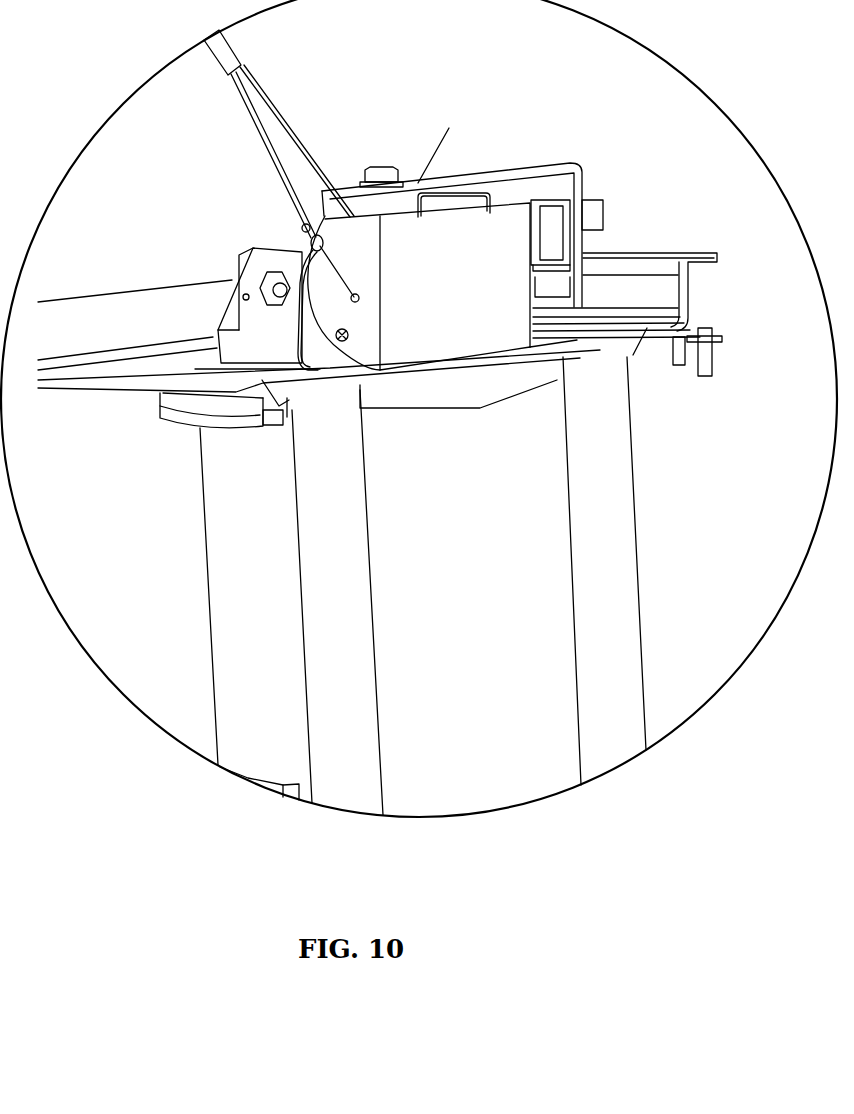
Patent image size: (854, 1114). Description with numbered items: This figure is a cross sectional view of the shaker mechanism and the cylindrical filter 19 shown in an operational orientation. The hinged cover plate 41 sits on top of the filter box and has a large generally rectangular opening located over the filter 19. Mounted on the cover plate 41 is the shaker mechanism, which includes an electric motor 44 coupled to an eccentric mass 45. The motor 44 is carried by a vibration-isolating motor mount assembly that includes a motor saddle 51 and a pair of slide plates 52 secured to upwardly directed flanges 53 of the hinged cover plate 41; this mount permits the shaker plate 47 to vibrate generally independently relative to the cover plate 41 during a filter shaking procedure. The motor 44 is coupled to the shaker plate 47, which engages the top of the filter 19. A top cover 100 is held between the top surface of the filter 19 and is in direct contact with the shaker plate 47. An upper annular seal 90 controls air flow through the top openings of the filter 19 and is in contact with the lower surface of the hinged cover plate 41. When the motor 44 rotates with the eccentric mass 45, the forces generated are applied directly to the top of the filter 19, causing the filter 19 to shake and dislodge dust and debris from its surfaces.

The cylindrical filter 19 is at (620, 467).
The hinged cover plate 41 is at (662, 253).
The electric motor 44 is at (509, 208).
The eccentric mass 45 is at (553, 210).
The shaker plate 47 is at (587, 357).
The motor saddle 51 is at (310, 247).
The slide plates 52 is at (247, 253).
The upwardly directed flanges 53 is at (235, 315).
The upper annular seal 90 is at (163, 400).
The top cover 100 is at (408, 413).